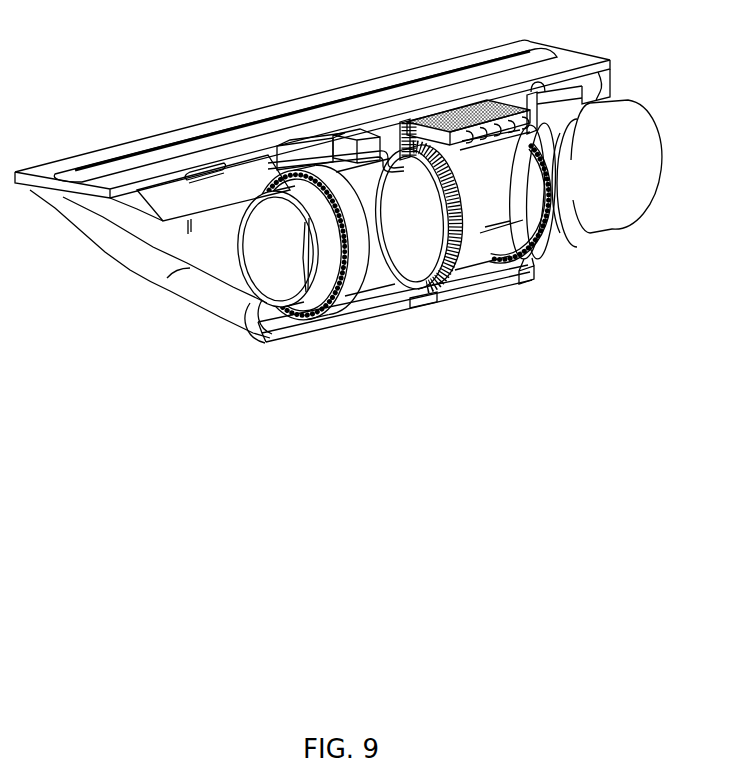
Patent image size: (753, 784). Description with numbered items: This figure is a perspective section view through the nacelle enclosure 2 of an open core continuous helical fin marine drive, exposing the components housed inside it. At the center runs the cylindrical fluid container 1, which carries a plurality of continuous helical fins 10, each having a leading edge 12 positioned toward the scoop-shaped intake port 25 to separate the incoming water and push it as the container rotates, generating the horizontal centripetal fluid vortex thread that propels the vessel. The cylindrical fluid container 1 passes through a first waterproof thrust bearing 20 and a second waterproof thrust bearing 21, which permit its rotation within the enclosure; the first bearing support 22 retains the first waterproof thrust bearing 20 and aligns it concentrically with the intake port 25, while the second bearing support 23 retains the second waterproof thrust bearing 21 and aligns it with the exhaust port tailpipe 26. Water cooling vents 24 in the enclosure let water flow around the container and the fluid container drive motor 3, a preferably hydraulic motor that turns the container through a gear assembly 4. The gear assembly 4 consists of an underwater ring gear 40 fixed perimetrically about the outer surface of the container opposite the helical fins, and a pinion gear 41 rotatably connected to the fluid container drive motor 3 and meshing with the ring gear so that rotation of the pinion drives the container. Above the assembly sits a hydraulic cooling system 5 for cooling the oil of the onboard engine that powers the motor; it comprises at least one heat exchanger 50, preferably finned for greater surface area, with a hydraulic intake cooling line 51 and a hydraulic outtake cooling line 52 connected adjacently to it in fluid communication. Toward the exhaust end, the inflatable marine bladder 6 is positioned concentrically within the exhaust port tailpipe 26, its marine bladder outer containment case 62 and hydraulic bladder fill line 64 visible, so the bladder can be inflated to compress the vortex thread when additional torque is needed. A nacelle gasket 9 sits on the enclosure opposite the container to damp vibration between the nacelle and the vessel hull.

The cylindrical fluid container 1 is at (478, 262).
The nacelle enclosure 2 is at (187, 273).
The fluid container drive motor 3 is at (357, 140).
The gear assembly 4 is at (418, 219).
The hydraulic cooling system 5 is at (550, 119).
The inflatable marine bladder 6 is at (586, 197).
The nacelle gasket 9 is at (255, 118).
The plurality of continuous helical fins 10 is at (304, 244).
The leading edge 12 is at (305, 274).
The first waterproof thrust bearing 20 is at (323, 325).
The second waterproof thrust bearing 21 is at (521, 280).
The first bearing support 22 is at (352, 304).
The second bearing support 23 is at (552, 250).
The plurality of water cooling vents 24 is at (200, 178).
The intake port 25 is at (160, 278).
The exhaust port tailpipe 26 is at (607, 70).
The underwater ring gear 40 is at (435, 293).
The pinion gear 41 is at (411, 125).
The at least one heat exchanger 50 is at (475, 113).
The hydraulic intake cooling line 51 is at (385, 168).
The hydraulic outtake cooling line 52 is at (465, 142).
The marine bladder outer containment case 62 is at (638, 130).
The hydraulic bladder fill line 64 is at (537, 92).